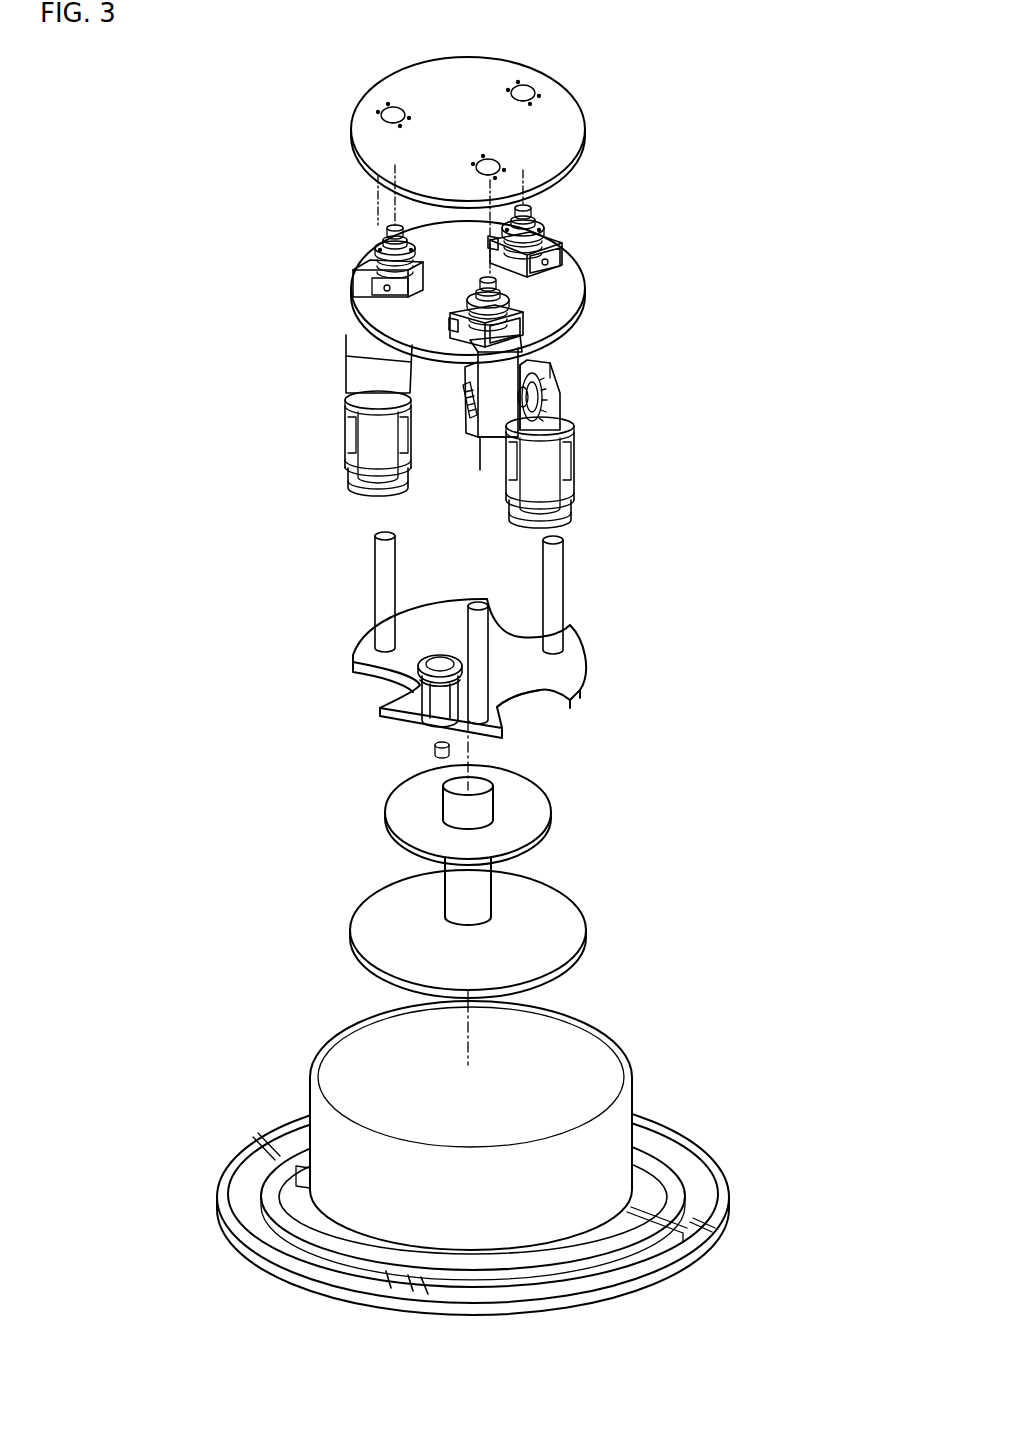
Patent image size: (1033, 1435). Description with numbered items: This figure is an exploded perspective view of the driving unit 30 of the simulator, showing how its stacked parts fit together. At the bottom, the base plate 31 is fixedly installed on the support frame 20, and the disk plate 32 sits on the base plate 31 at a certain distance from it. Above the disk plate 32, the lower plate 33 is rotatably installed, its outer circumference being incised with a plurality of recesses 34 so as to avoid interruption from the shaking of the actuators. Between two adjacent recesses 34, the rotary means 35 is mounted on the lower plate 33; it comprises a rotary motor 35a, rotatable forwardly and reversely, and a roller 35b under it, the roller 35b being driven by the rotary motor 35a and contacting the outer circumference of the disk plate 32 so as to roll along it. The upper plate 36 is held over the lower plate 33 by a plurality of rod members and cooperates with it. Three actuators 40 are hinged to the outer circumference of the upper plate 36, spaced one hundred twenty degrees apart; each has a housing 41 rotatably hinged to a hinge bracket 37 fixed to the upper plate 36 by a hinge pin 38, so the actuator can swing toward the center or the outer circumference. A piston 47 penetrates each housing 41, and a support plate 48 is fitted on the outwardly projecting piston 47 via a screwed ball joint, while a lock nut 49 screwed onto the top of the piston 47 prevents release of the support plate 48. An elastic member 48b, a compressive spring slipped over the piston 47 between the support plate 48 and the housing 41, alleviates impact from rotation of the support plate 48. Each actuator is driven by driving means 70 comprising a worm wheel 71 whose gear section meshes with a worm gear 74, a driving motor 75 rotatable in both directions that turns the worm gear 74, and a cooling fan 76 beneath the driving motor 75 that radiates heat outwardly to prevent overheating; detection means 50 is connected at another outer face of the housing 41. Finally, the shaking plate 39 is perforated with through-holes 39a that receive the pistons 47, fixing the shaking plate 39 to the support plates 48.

The support frame 20 is at (300, 1252).
The driving unit 30 is at (645, 122).
The base plate 31 is at (572, 932).
The disk plate 32 is at (537, 818).
The lower plate 33 is at (575, 668).
The recesses 34 is at (523, 697).
The rotary means 35 is at (417, 712).
The rotary motor 35a is at (438, 662).
The roller 35b is at (430, 757).
The upper plate 36 is at (570, 303).
The hinge bracket 37 is at (359, 360).
The hinge pin 38 is at (387, 290).
The shaking plate 39 is at (362, 128).
The through-holes 39a is at (525, 92).
The actuators 40 is at (472, 452).
The housing 41 is at (502, 437).
The piston 47 is at (523, 205).
The support plate 48 is at (565, 229).
The elastic member 48b is at (368, 252).
The lock nut 49 is at (543, 213).
The detection means 50 is at (487, 440).
The driving means 70 is at (582, 449).
The worm wheel 71 is at (543, 375).
The worm gear 74 is at (533, 410).
The driving motor 75 is at (565, 478).
The cooling fan 76 is at (565, 522).